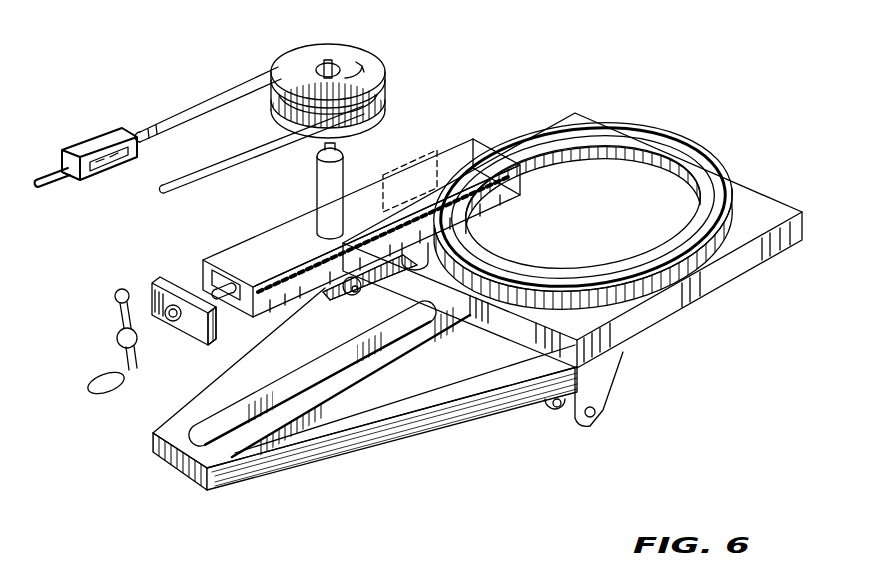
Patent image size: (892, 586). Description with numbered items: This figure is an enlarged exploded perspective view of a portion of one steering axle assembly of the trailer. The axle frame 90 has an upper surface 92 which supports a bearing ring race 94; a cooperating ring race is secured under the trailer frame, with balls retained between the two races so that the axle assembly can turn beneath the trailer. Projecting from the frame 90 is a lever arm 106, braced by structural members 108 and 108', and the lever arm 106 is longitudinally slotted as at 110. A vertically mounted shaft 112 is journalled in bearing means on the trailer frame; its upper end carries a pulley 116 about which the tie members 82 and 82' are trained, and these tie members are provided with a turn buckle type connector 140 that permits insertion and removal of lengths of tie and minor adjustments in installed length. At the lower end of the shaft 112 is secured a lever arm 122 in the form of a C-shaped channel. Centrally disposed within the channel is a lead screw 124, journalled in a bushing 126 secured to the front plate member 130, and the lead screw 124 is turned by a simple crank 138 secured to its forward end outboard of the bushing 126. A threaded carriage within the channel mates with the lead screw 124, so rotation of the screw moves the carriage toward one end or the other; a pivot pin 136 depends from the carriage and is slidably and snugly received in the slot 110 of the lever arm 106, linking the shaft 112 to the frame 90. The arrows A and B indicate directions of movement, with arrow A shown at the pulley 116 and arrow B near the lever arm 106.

The tie member 82 is at (261, 149).
The tie member 82' is at (208, 104).
The frame 90 is at (677, 303).
The upper surface 92 is at (752, 207).
The bearing ring race 94 is at (672, 135).
The lever arm 106 is at (327, 405).
The structural member 108 is at (392, 429).
The structural member 108' is at (295, 386).
The slot 110 is at (233, 425).
The shaft 112 is at (317, 190).
The pulley 116 is at (312, 57).
The lever arm 122 is at (225, 260).
The lead screw 124 is at (228, 294).
The bushing 126 is at (173, 288).
The front plate member 130 is at (147, 293).
The pivot pin 136 is at (427, 270).
The crank 138 is at (118, 357).
The turn buckle type connector 140 is at (100, 137).
The rotation direction A is at (378, 72).
The direction arrow B is at (103, 465).